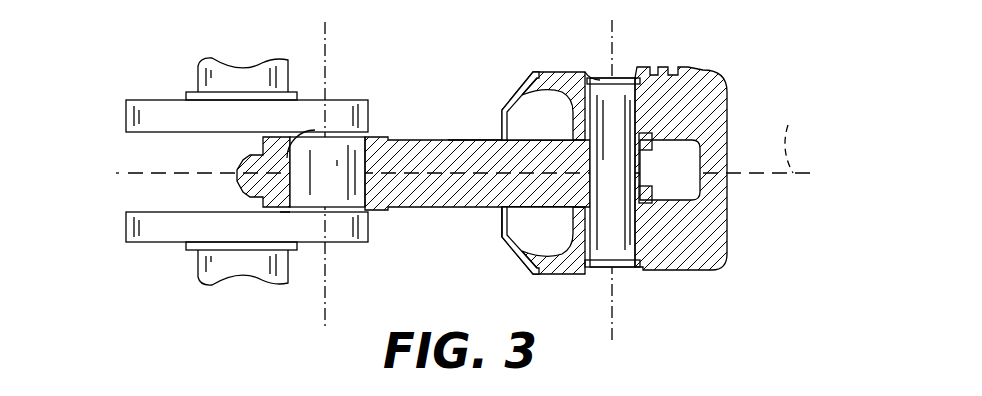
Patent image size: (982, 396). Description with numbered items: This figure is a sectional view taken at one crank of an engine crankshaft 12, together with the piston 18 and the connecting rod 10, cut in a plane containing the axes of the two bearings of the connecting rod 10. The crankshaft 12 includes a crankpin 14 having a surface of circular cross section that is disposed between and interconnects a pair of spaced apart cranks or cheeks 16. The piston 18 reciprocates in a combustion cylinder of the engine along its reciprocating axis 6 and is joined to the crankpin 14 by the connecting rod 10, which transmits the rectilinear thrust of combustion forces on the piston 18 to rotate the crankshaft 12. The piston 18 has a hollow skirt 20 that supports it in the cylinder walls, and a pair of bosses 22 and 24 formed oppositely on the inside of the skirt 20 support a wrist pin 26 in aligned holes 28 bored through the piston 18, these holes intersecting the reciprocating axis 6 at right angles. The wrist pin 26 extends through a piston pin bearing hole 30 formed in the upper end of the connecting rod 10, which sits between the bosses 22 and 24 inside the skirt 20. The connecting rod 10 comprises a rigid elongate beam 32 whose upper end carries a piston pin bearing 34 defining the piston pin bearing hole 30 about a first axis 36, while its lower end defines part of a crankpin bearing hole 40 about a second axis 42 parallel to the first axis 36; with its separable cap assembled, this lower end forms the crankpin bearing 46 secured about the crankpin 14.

The reciprocating axis 6 is at (798, 135).
The connecting rod 10 is at (405, 138).
The crankshaft 12 is at (236, 276).
The crankpin 14 is at (327, 197).
The cheeks 16 is at (157, 110).
The piston 18 is at (707, 262).
The hollow skirt 20 is at (503, 247).
The boss 22 is at (520, 96).
The boss 24 is at (533, 253).
The wrist pin 26 is at (605, 272).
The aligned holes 28 is at (622, 262).
The piston pin bearing hole 30 is at (700, 140).
The beam 32 is at (448, 140).
The piston pin bearing 34 is at (656, 189).
The first axis 36 is at (613, 38).
The crankpin bearing hole 40 is at (315, 130).
The second axis 42 is at (326, 60).
The crankpin bearing 46 is at (249, 151).